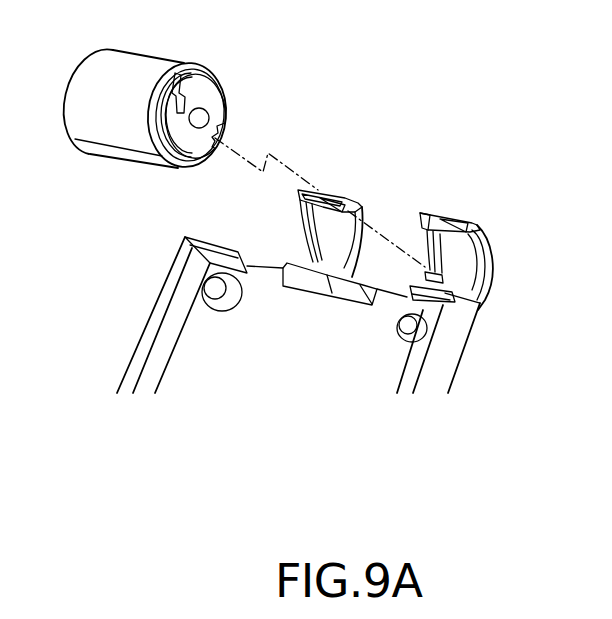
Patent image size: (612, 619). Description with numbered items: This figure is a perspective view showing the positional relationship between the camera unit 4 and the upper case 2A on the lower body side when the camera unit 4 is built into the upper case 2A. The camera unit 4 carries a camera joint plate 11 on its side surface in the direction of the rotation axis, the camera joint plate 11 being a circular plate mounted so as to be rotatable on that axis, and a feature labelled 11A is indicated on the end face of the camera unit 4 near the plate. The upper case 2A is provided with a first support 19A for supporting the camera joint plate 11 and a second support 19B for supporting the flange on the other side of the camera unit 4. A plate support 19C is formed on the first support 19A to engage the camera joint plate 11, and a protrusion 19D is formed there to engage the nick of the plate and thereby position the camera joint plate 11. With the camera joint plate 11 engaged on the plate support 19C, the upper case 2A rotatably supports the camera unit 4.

The camera unit 4 is at (102, 73).
The camera joint plate 11 is at (220, 92).
The notch of motor face 11A is at (230, 124).
The first support 19A is at (502, 220).
The second support 19B is at (358, 200).
The plate support 19C is at (450, 217).
The protrusion 19D is at (455, 266).
The upper case 2A is at (395, 373).